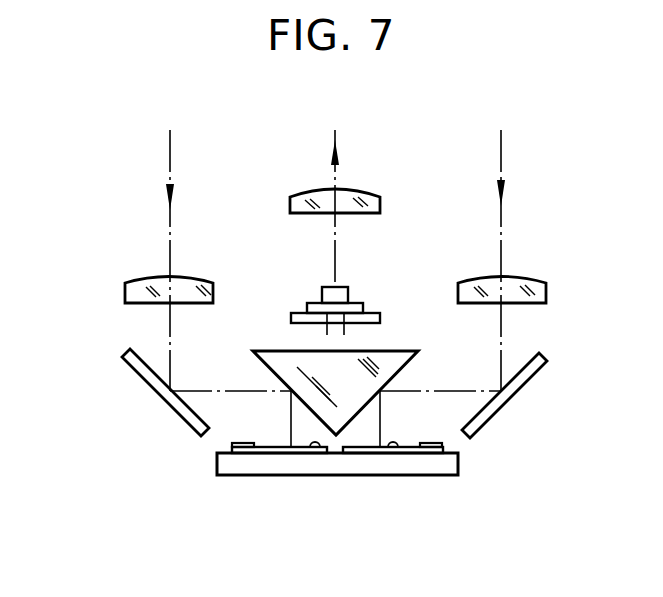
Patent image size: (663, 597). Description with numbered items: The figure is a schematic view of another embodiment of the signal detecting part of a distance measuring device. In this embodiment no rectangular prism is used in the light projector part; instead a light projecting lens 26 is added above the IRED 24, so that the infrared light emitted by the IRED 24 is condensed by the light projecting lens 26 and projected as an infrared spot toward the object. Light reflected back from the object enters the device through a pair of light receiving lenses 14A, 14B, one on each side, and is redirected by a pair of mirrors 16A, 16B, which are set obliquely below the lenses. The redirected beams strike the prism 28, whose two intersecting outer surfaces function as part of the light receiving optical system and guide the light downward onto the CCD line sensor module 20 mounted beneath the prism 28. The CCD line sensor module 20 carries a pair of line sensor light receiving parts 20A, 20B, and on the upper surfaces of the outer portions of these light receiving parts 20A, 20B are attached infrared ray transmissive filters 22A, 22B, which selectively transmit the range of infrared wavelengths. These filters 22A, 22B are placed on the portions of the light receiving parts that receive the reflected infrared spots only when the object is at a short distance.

The light receiving lens 14A is at (125, 292).
The light receiving lens 14B is at (546, 293).
The mirror 16A is at (135, 379).
The mirror 16B is at (535, 373).
The CCD line sensor module 20 is at (334, 490).
The line sensor light receiving part 20A is at (309, 451).
The line sensor light receiving part 20B is at (398, 452).
The infrared ray transmissive filter 22A is at (246, 443).
The infrared ray transmissive filter 22B is at (442, 443).
The IRED 24 is at (348, 292).
The light projecting lens 26 is at (357, 191).
The prism 28 is at (393, 358).